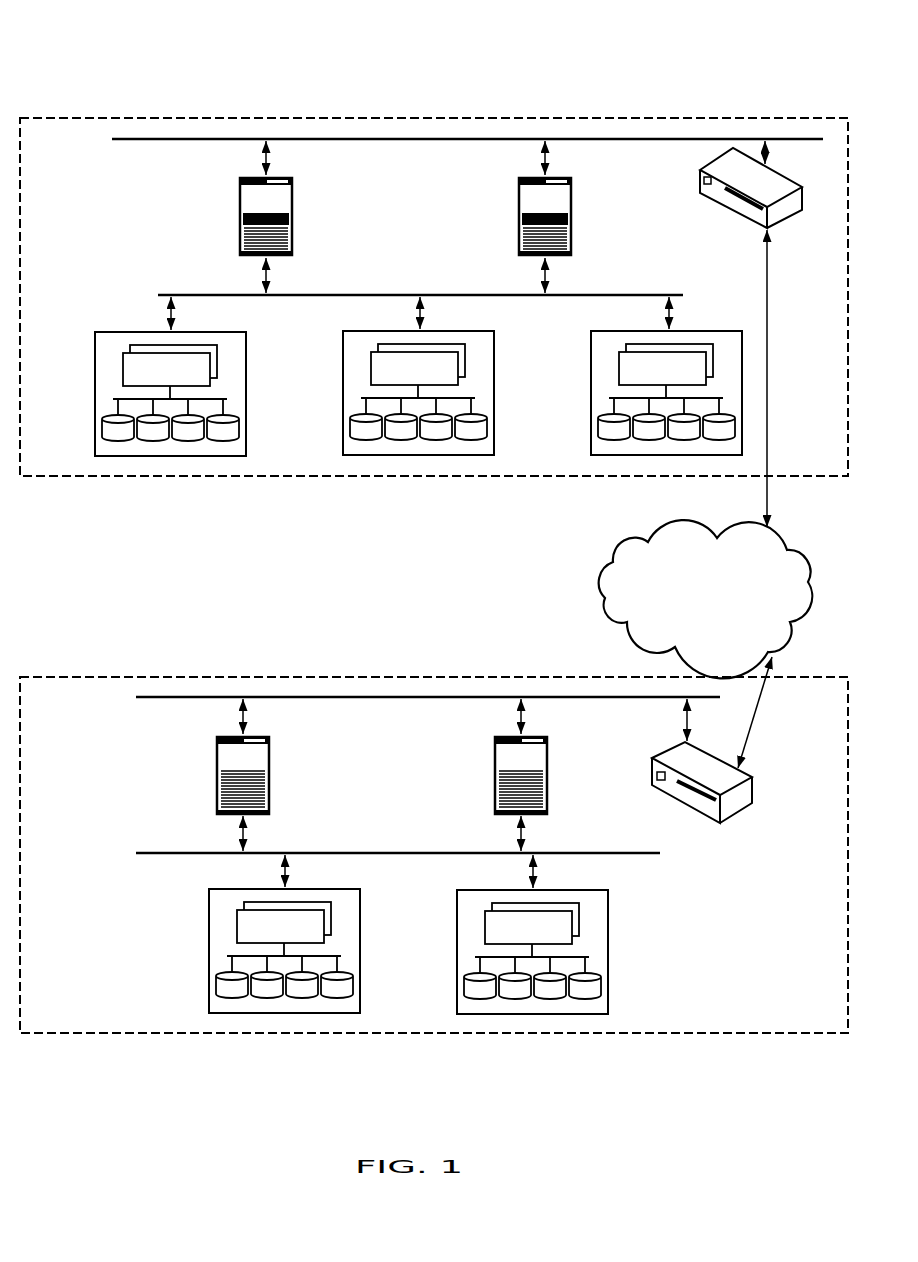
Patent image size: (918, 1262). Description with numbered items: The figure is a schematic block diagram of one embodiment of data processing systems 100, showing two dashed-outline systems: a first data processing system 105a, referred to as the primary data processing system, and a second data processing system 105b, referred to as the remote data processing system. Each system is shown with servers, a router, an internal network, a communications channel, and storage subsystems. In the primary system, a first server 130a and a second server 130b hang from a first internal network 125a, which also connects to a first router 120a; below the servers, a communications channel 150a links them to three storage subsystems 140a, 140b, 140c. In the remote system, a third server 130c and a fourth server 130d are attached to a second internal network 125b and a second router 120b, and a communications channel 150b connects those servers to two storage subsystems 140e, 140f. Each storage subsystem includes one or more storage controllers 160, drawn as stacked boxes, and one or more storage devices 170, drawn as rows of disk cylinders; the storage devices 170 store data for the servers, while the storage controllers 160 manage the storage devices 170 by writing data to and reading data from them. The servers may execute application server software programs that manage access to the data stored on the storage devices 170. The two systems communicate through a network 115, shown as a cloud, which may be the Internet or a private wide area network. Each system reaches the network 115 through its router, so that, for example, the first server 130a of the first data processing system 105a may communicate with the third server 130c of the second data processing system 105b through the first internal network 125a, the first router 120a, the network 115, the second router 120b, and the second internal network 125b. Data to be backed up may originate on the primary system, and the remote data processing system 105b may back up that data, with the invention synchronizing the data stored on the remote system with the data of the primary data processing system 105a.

The data processing systems 100 is at (100, 58).
The first data processing system 105a is at (200, 118).
The second data processing system 105b is at (200, 676).
The network 115 is at (692, 613).
The first router 120a is at (700, 180).
The second router 120b is at (753, 779).
The first internal network 125a is at (143, 142).
The second internal network 125b is at (172, 700).
The first server 130a is at (295, 211).
The server 130b is at (574, 211).
The third server 130c is at (272, 770).
The server 130d is at (550, 770).
The storage subsystem 140a is at (248, 364).
The storage subsystem 140b is at (497, 364).
The storage subsystem 140c is at (697, 330).
The storage subsystem 140e is at (363, 920).
The storage subsystem 140f is at (611, 920).
The communications channel 150a is at (357, 294).
The communications channel 150b is at (334, 852).
The storage controller 160 is at (123, 368).
The storage device 170 is at (102, 428).